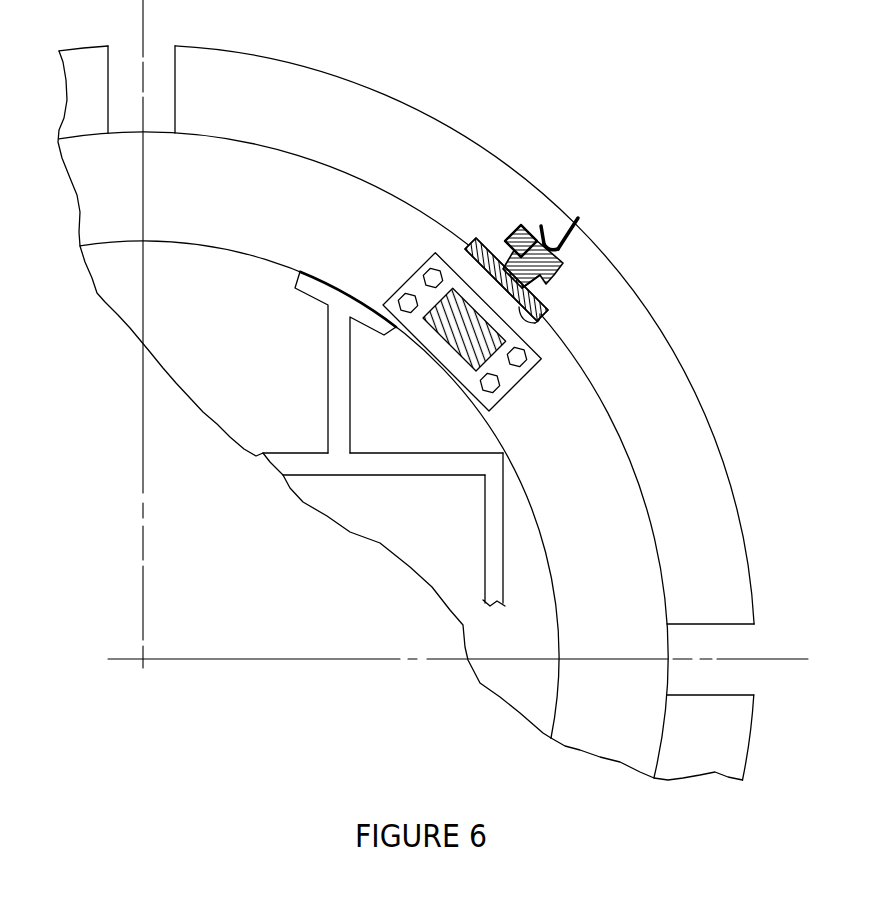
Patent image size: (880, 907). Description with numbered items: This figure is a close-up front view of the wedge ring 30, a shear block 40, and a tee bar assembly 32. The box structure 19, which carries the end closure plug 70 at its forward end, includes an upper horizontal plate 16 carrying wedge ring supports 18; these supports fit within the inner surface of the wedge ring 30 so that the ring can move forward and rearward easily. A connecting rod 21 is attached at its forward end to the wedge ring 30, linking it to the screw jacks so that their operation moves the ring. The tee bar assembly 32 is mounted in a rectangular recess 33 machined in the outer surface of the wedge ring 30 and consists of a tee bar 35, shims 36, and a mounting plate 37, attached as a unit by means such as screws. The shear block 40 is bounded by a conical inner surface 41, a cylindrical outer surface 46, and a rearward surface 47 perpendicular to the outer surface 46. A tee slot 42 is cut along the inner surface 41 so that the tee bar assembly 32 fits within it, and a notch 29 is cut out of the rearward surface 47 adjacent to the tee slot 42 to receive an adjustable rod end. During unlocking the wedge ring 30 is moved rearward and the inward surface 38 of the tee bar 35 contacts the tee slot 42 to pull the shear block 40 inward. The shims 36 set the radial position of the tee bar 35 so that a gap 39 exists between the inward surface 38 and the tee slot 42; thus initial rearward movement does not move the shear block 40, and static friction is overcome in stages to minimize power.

The upper horizontal plate 16 is at (423, 477).
The wedge ring support 18 is at (309, 298).
The box structure 19 is at (485, 542).
The connecting rod 21 is at (498, 360).
The notch 29 is at (566, 234).
The wedge ring 30 is at (674, 641).
The tee bar assembly 32 is at (566, 254).
The rectangular recess 33 is at (538, 325).
The tee bar 35 is at (553, 272).
The shim 36 is at (547, 309).
The mounting plate 37 is at (540, 297).
The inward surface 38 is at (523, 233).
The gap 39 is at (559, 222).
The shear block 40 is at (744, 511).
The conical inner surface 41 is at (650, 507).
The tee slot 42 is at (512, 231).
The cylindrical outer surface 46 is at (717, 439).
The rearward surface 47 is at (663, 402).
The end closure plug 70 is at (272, 424).